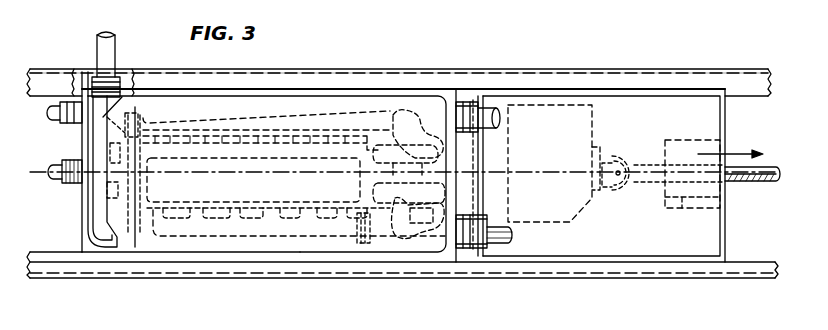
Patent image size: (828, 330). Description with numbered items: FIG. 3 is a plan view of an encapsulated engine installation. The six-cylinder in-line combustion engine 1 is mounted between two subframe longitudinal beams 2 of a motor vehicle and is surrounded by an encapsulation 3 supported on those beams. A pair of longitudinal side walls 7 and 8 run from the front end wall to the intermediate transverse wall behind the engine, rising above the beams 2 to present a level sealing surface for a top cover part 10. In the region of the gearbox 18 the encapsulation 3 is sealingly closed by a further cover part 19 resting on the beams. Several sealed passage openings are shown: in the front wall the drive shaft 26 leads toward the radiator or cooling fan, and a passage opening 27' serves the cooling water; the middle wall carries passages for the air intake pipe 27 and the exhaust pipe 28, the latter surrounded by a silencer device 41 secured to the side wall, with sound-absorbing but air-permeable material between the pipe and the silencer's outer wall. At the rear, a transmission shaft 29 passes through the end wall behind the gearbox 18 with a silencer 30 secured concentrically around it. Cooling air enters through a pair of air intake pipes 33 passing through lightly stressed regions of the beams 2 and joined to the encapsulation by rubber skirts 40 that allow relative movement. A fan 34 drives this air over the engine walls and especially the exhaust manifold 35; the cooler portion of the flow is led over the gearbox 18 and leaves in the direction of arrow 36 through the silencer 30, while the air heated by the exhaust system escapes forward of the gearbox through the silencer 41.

The combustion engine 1 is at (282, 188).
The subframe longitudinal beams 2 is at (755, 80).
The encapsulation 3 is at (322, 253).
The longitudinal side wall 7 is at (396, 95).
The longitudinal side wall 8 is at (384, 254).
The top cover part 10 is at (203, 247).
The gearbox 18 is at (556, 230).
The cover part 19 is at (620, 243).
The drive shaft 26 is at (54, 177).
The air intake pipe 27 is at (489, 85).
The passage opening for the cooling water 27' is at (54, 127).
The exhaust pipe 28 is at (498, 244).
The transmission shaft 29 is at (760, 183).
The silencer 30 is at (681, 206).
The air intake pipes 33 is at (102, 50).
The fan 34 is at (107, 197).
The exhaust manifold 35 is at (240, 228).
The arrow 36 is at (740, 153).
The rubber skirts 40 is at (115, 80).
The silencer device 41 is at (470, 236).